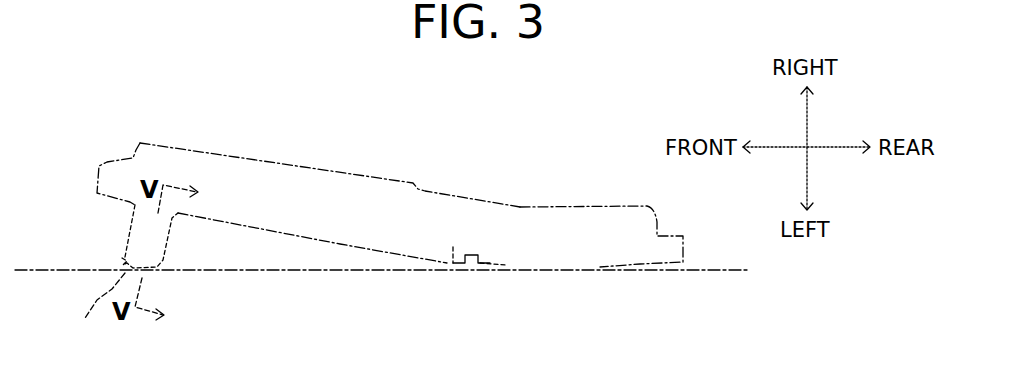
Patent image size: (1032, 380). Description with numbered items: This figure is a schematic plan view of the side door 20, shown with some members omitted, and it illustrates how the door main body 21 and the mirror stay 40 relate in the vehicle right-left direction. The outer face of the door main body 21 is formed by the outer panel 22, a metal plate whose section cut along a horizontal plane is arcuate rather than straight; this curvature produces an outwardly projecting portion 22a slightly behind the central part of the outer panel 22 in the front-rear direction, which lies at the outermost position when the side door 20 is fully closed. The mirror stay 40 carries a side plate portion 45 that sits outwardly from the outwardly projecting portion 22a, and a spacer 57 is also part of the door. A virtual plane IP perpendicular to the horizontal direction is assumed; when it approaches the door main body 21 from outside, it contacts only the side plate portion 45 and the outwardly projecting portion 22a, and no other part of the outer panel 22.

The side door 20 is at (344, 158).
The door main body 21 is at (528, 205).
The outer panel 22 is at (338, 246).
The outwardly projecting portion 22a is at (467, 272).
The mirror stay 40 is at (127, 242).
The side plate portion 45 is at (95, 314).
The spacer 57 is at (491, 257).
The virtual plane IP is at (728, 268).